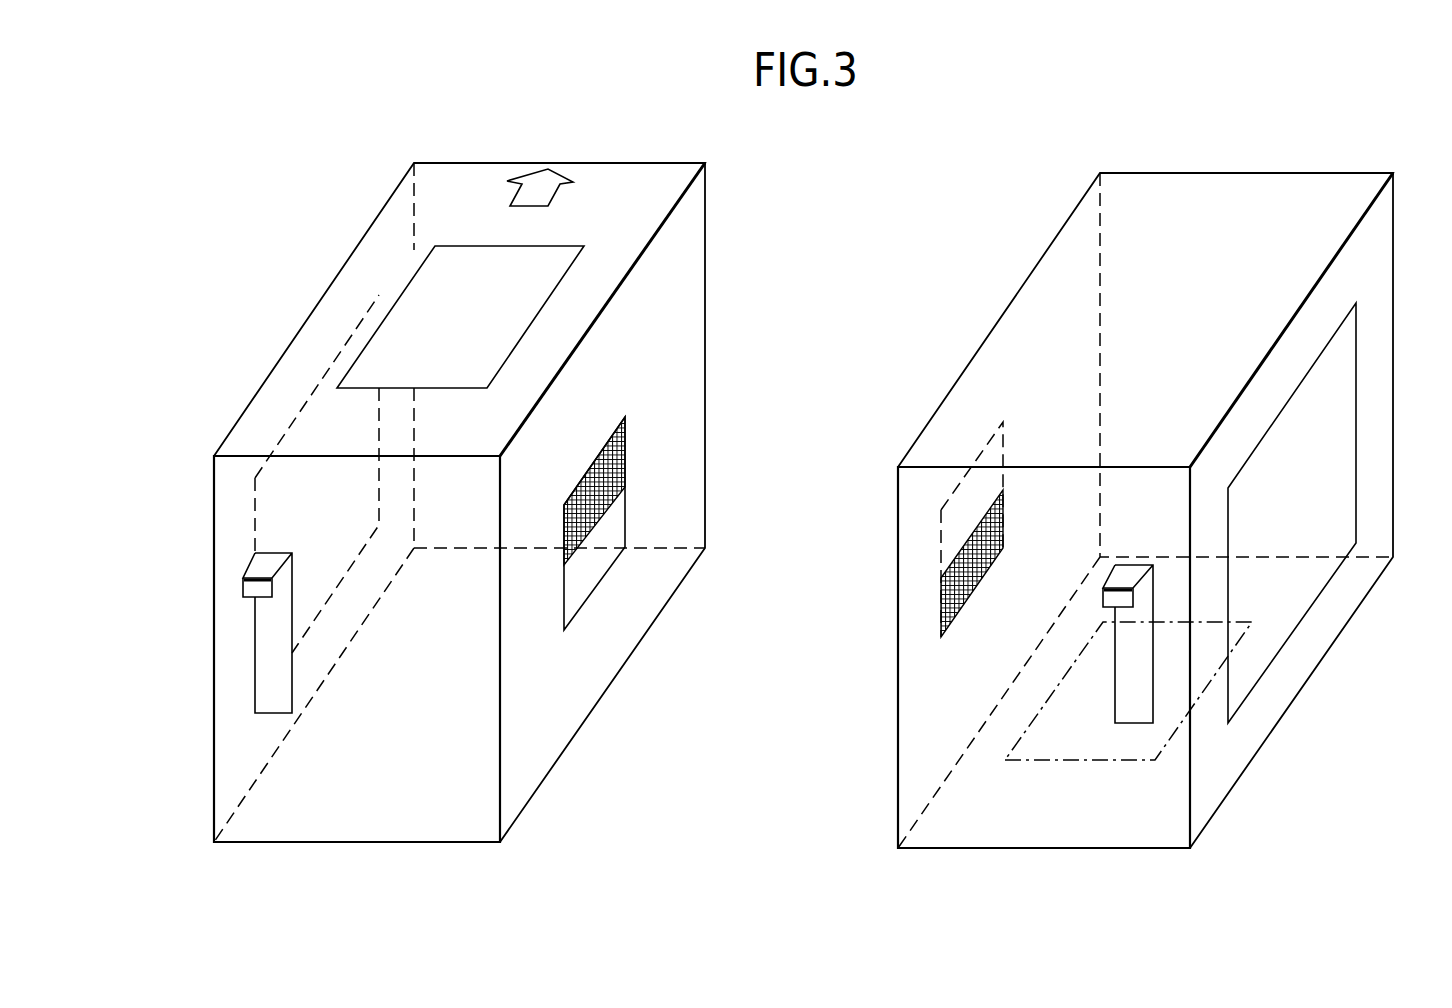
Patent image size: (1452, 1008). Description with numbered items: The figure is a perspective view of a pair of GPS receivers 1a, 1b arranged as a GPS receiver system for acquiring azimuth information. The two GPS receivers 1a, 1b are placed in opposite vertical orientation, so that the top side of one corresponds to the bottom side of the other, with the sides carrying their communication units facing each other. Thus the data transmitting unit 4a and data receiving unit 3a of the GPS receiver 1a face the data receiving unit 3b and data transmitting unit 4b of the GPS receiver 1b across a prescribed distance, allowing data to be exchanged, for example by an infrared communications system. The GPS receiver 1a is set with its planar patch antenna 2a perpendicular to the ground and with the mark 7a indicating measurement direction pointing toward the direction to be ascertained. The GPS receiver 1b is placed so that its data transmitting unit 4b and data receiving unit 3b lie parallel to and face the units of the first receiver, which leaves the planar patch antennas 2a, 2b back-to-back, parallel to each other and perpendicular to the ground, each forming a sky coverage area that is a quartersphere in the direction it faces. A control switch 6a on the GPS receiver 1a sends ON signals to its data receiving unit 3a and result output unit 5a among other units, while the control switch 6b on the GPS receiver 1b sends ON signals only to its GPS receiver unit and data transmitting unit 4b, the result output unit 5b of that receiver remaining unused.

The GPS receiver 1a is at (693, 281).
The planar patch antenna 2a is at (297, 442).
The data receiving unit 3a is at (616, 520).
The data transmitting unit 4a is at (625, 467).
The result output unit 5a is at (438, 307).
The control switch 6a is at (255, 589).
The mark indicating measurement direction 7a is at (534, 177).
The GPS receiver 1b is at (1220, 194).
The planar patch antenna 2b is at (1338, 472).
The data receiving unit 3b is at (984, 450).
The data transmitting unit 4b is at (940, 598).
The result output unit 5b is at (1072, 745).
The control switch 6b is at (1142, 588).